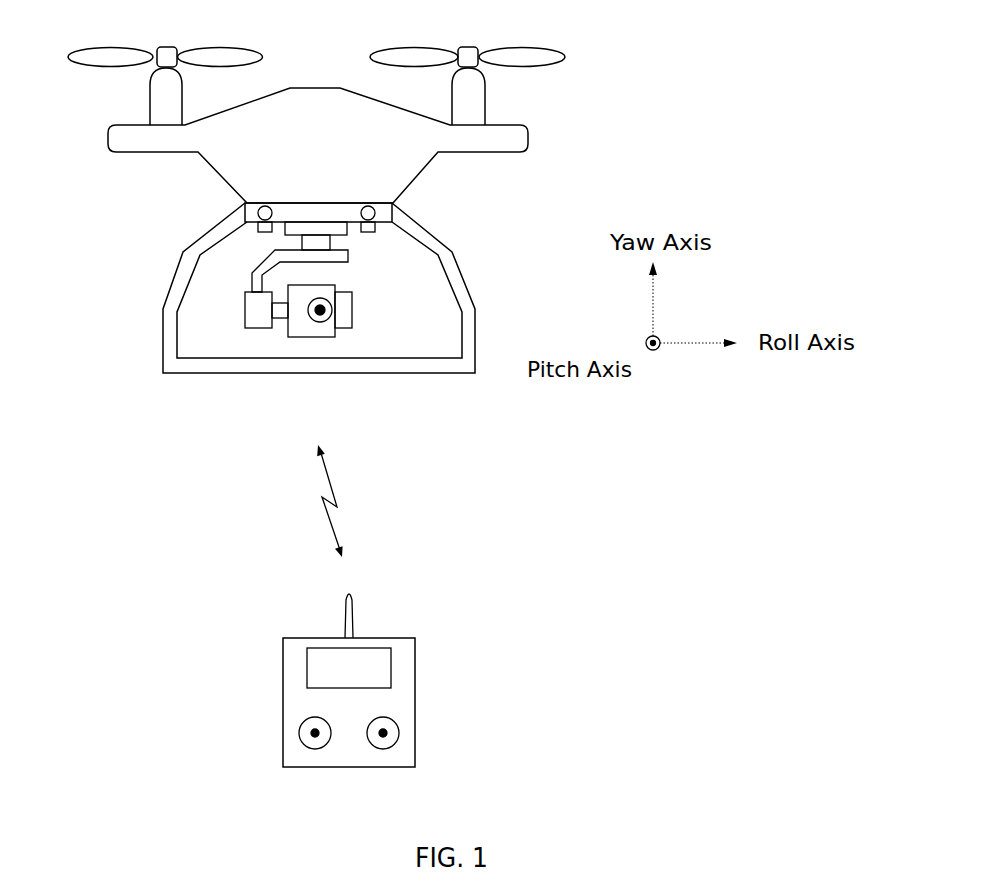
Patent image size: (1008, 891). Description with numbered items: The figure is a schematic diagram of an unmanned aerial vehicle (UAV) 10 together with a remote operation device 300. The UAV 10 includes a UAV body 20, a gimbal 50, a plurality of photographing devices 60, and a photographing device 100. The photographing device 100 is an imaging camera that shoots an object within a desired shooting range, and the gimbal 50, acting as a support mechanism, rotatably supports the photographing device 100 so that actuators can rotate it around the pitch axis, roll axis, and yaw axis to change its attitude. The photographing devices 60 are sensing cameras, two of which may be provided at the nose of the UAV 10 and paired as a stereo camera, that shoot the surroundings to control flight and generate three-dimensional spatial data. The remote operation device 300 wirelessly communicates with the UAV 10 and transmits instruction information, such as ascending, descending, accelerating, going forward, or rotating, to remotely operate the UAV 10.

The unmanned aerial vehicle (UAV) 10 is at (365, 229).
The UAV body 20 is at (318, 93).
The gimbal 50 is at (268, 265).
The photographing devices 60 is at (246, 206).
The photographing device 100 is at (313, 332).
The remote operation device 300 is at (416, 705).